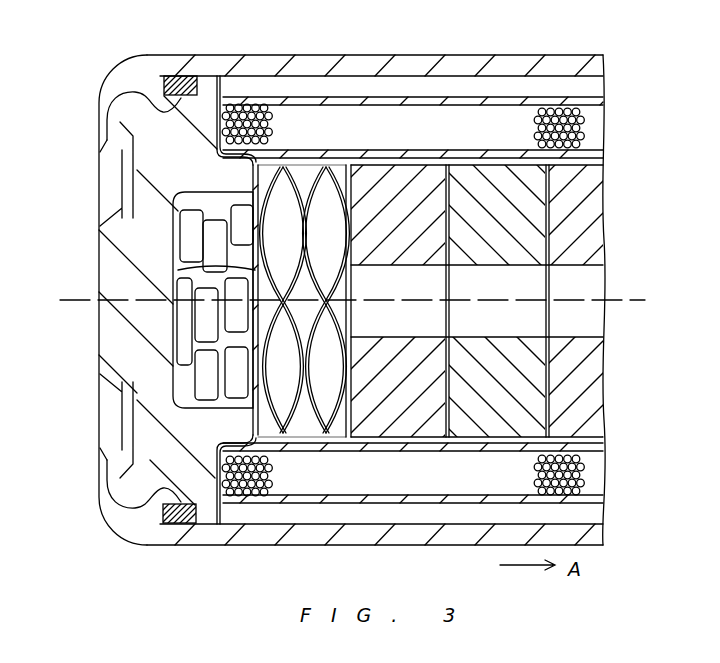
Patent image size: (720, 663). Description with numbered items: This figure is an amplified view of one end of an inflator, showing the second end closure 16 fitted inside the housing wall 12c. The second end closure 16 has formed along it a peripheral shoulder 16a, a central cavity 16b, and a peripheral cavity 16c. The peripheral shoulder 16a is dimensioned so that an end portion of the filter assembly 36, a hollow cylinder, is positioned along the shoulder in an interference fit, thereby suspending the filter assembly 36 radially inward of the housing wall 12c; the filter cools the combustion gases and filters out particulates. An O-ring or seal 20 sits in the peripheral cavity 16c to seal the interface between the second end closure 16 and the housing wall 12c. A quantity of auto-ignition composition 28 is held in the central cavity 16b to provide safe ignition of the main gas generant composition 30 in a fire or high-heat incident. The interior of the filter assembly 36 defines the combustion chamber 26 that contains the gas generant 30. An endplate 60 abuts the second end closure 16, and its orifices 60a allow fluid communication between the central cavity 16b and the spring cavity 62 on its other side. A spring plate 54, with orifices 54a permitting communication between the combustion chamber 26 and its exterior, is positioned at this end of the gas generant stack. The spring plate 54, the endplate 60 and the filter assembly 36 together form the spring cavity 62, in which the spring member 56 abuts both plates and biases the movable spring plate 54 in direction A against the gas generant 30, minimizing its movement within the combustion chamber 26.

The housing wall 12c is at (200, 538).
The second end closure 16 is at (166, 457).
The peripheral shoulder 16a is at (225, 77).
The central cavity 16b is at (210, 198).
The peripheral cavity 16c is at (122, 92).
The seal 20 is at (173, 77).
The combustion chamber 26 is at (601, 157).
The auto-ignition composition 28 is at (187, 232).
The gas generant composition 30 is at (410, 391).
The filter assembly 36 is at (563, 92).
The spring plate 54 is at (332, 402).
The orifice 54a is at (352, 274).
The spring member 56 is at (290, 165).
The endplate 60 is at (240, 480).
The orifice 60a is at (188, 280).
The spring cavity 62 is at (302, 432).